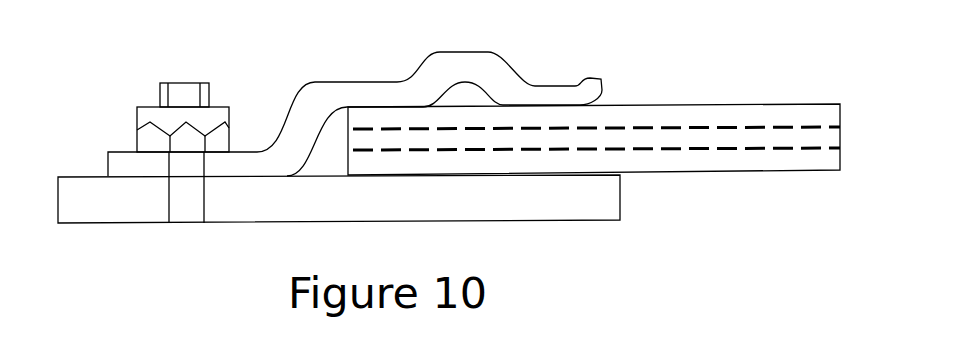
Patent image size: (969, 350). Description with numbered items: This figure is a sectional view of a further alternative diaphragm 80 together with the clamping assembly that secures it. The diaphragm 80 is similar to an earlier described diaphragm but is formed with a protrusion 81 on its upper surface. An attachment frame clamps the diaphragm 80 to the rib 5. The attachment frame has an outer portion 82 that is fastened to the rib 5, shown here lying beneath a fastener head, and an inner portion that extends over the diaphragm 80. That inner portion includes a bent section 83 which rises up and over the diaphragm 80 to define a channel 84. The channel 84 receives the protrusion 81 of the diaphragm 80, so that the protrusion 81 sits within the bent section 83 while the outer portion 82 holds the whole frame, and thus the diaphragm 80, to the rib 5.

The rib 5 is at (263, 200).
The diaphragm 80 is at (657, 118).
The protrusion 81 is at (433, 122).
The outer portion 82 is at (125, 163).
The bent section 83 is at (455, 72).
The channel 84 is at (475, 83).